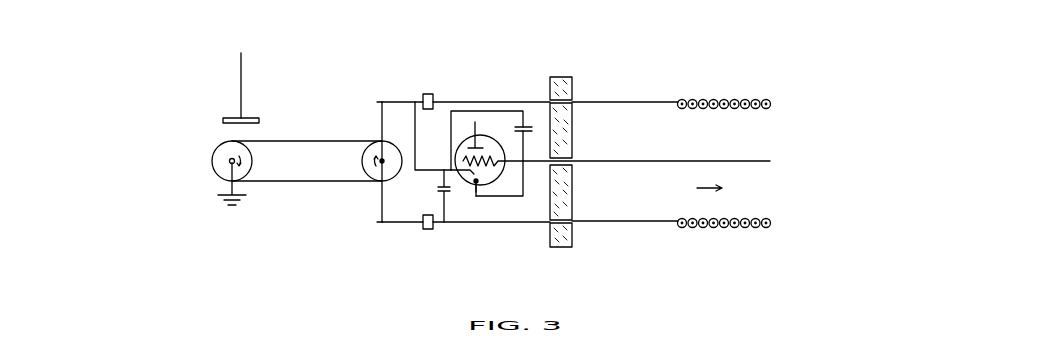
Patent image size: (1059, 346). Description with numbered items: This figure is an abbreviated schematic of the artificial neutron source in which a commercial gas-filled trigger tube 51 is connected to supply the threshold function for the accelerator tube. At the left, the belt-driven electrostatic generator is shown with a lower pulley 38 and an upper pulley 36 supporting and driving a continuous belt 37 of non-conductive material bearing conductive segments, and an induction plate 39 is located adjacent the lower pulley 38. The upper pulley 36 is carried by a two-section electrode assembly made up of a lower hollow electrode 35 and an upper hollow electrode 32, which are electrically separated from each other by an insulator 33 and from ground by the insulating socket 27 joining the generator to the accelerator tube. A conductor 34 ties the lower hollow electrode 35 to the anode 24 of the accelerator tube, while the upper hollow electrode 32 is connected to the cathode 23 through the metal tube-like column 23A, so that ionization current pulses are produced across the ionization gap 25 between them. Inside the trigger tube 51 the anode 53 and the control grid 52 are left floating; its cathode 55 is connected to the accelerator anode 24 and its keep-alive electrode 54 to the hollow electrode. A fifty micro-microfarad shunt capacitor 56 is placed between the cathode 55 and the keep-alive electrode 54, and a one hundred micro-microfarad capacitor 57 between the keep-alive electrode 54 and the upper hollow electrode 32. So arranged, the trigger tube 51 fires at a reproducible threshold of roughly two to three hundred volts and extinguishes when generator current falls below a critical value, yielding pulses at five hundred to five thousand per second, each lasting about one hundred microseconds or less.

The cathode 23 is at (750, 100).
The column 23A is at (664, 100).
The anode 24 is at (730, 160).
The ionization gap 25 is at (698, 188).
The insulating socket 27 is at (573, 90).
The upper hollow electrode 32 is at (527, 101).
The insulator 33 is at (432, 94).
The conductor 34 is at (416, 126).
The lower hollow electrode 35 is at (410, 100).
The upper pulley 36 is at (362, 166).
The belt 37 is at (338, 140).
The lower pulley 38 is at (253, 163).
The induction plate 39 is at (246, 117).
The trigger tube 51 is at (496, 178).
The filament resistor 52 is at (506, 161).
The anode 53 is at (479, 128).
The keep alive electrode 54 is at (446, 170).
The cathode 55 is at (473, 191).
The shunt capacitor 56 is at (525, 126).
The capacitor 57 is at (439, 189).